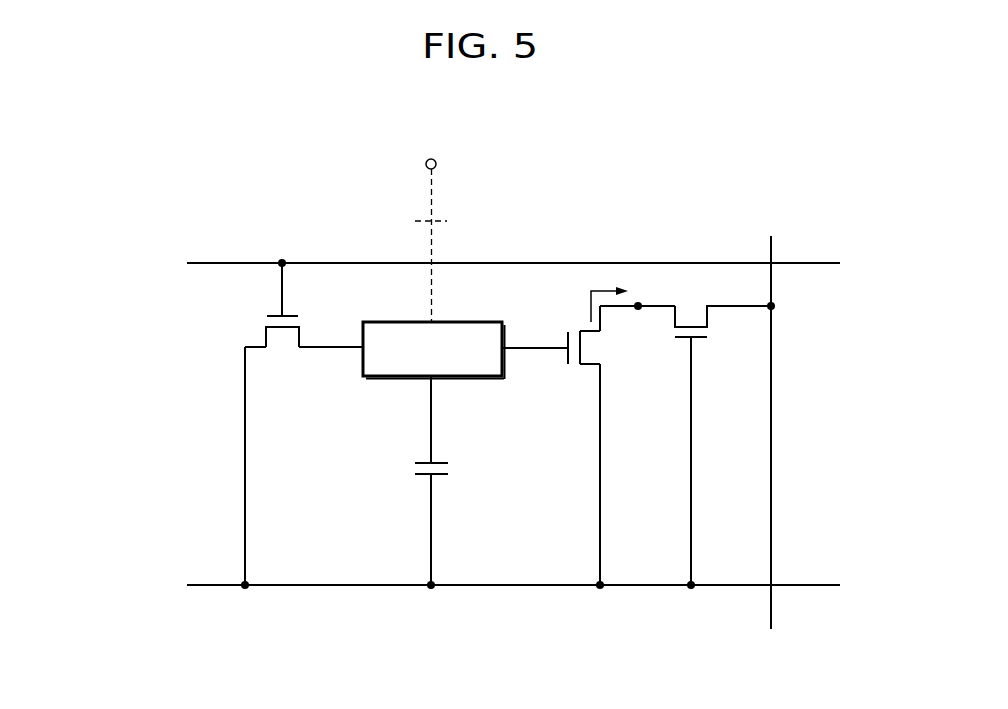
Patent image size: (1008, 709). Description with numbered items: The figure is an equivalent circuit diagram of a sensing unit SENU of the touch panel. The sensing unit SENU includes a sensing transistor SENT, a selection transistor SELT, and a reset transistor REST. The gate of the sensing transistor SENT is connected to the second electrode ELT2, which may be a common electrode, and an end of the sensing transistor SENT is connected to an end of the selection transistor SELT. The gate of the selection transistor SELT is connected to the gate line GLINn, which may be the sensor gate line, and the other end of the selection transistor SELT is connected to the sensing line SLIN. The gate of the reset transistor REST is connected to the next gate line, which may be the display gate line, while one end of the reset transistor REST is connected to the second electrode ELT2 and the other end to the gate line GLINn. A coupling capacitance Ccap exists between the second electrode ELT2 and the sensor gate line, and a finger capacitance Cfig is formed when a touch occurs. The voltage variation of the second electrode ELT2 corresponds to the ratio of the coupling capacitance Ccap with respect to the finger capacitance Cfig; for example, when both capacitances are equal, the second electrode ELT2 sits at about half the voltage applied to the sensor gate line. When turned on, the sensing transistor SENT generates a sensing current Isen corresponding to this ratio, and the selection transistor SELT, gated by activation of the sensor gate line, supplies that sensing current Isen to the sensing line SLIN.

The sensing unit SENU is at (720, 150).
The gate line GLINn is at (473, 599).
The sensing line SLIN is at (771, 414).
The reset transistor REST is at (302, 424).
The second electrode ELT2 is at (434, 350).
The finger capacitance Cfig is at (456, 240).
The coupling capacitance Ccap is at (463, 482).
The sensing transistor SENT is at (588, 445).
The sensing current Isen is at (585, 300).
The selection transistor SELT is at (721, 434).